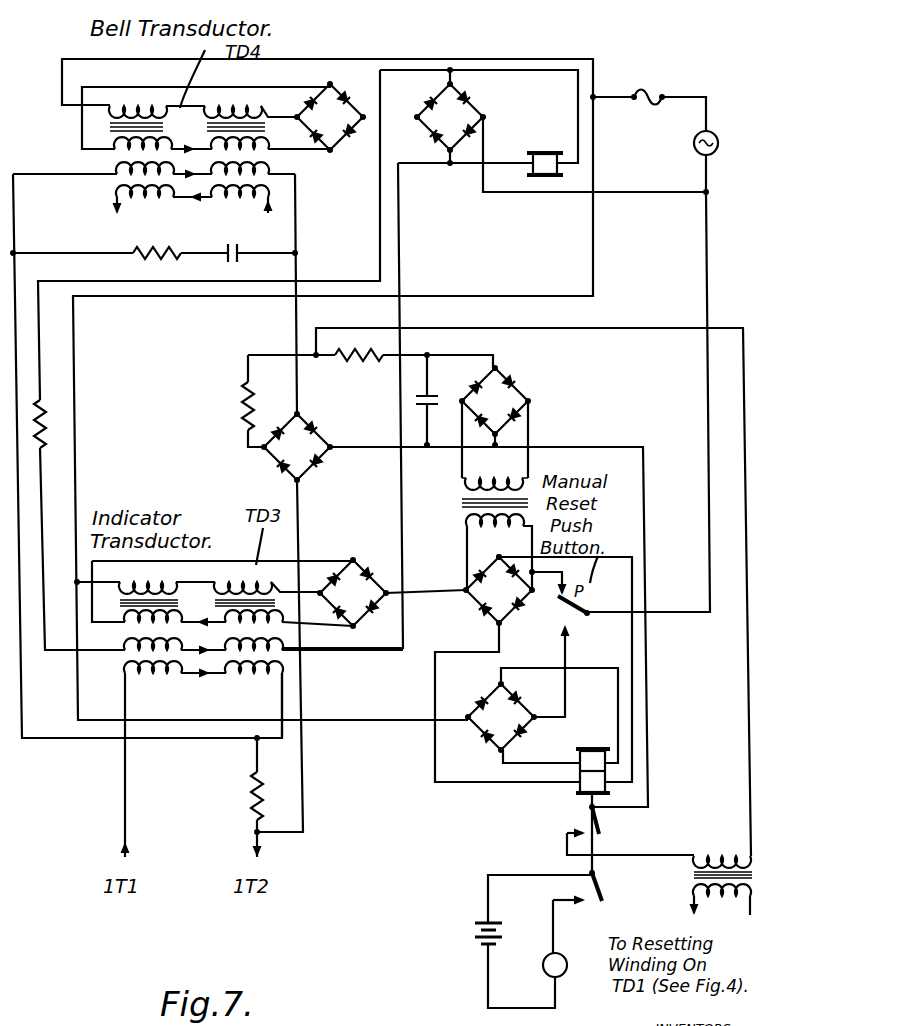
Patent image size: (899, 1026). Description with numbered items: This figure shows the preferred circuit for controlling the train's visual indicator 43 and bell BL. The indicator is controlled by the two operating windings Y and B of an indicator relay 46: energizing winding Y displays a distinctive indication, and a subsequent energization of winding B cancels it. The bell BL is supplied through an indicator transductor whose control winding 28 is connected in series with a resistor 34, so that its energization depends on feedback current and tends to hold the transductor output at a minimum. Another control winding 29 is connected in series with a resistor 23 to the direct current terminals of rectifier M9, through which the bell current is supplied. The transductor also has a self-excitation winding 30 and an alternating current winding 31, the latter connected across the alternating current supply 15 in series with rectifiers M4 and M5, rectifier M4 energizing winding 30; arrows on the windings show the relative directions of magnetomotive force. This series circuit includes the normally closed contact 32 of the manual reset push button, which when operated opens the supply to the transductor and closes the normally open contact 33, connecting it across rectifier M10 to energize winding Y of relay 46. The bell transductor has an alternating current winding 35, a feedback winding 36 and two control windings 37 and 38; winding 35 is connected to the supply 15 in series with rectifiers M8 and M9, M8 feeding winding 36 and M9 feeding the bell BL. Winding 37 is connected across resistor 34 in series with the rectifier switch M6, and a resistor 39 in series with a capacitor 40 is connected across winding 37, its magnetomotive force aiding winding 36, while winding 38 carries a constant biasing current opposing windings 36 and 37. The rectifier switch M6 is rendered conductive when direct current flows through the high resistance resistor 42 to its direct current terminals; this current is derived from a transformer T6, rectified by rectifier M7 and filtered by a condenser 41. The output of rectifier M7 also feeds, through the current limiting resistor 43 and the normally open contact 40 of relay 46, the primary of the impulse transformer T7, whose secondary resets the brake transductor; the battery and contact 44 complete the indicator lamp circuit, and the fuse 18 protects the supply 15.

The alternating current supply 15 is at (719, 141).
The fuse 18 is at (648, 95).
The resistor 23 is at (42, 446).
The control winding 28 is at (160, 676).
The control winding 29 is at (130, 653).
The self-excitation winding 30 is at (201, 608).
The alternating current winding 31 is at (148, 590).
The normally closed contact 32 is at (597, 604).
The normally open contact 33 is at (570, 628).
The resistor 34 is at (250, 794).
The alternating current winding 35 is at (147, 74).
The feedback winding 36 is at (174, 110).
The control winding 37 is at (118, 171).
The control winding 38 is at (140, 198).
The resistor 39 is at (176, 252).
The capacitor / normally open contact 40 is at (237, 260).
The condenser 41 is at (430, 397).
The resistor 42 is at (241, 404).
The visual indicator / current limiting resistor 43 is at (361, 362).
The switch contact 44 is at (600, 880).
The indicator relay 46 is at (592, 745).
The rectifier M4 is at (361, 555).
The rectifier M5 is at (487, 562).
The rectifier switch M6 is at (318, 436).
The rectifier M7 is at (530, 394).
The rectifier M8 is at (343, 84).
The rectifier M9 is at (467, 101).
The rectifier M10 is at (494, 700).
The transformer T6 is at (460, 503).
The impulse transformer T7 is at (691, 877).
The bell BL is at (548, 152).